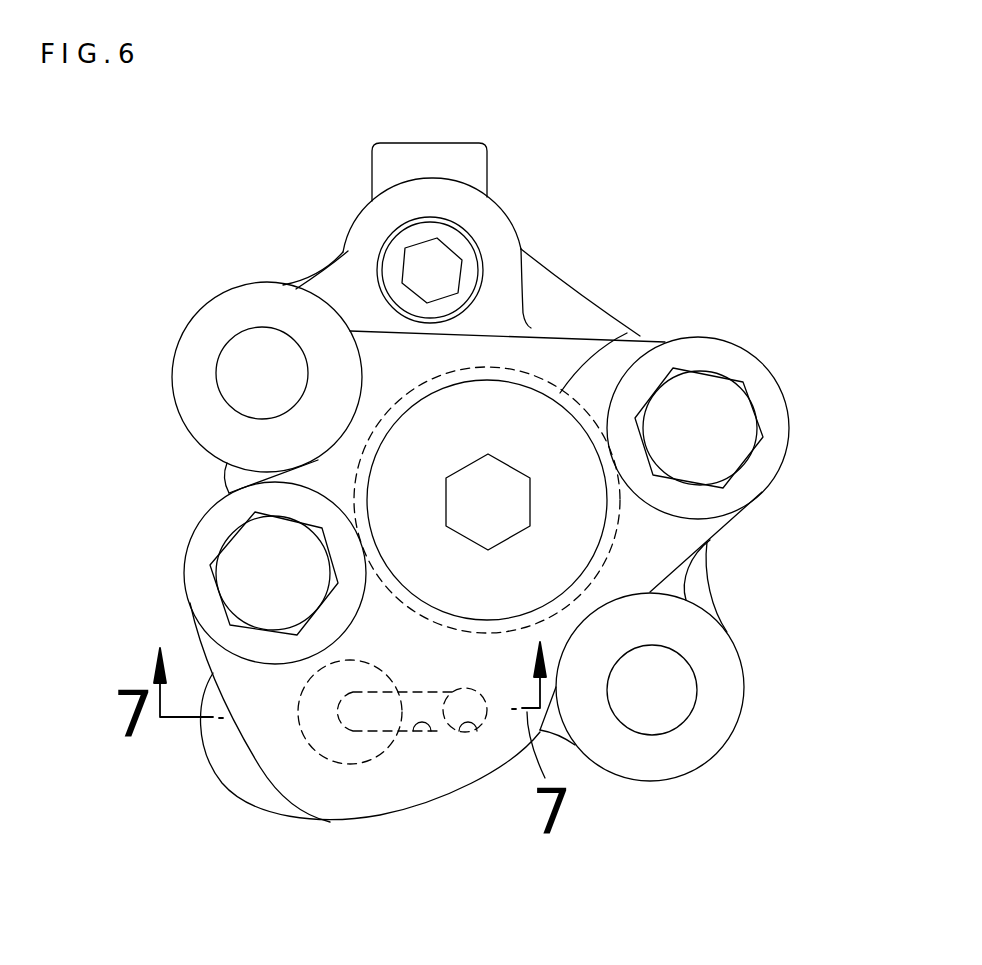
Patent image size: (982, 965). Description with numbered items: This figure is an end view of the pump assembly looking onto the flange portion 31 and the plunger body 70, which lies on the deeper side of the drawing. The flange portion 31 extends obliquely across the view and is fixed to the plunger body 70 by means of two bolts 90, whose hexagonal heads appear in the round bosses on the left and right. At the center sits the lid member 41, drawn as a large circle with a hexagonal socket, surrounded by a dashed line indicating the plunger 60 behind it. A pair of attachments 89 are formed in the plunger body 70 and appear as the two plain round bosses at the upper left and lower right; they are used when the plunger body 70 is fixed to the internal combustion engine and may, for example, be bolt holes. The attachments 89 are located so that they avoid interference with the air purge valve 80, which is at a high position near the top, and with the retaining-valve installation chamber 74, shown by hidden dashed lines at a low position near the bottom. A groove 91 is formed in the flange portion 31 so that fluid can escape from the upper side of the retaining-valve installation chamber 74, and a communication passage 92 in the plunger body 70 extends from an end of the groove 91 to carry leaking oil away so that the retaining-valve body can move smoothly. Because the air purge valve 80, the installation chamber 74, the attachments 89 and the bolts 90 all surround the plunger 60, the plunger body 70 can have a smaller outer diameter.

The flange portion 31 is at (753, 350).
The lid member 41 is at (560, 513).
The plunger 60 is at (625, 328).
The plunger body 70 is at (560, 303).
The retaining-valve installation chamber 74 is at (352, 762).
The air purge valve 80 is at (470, 200).
The attachment 89 is at (219, 363).
The bolt 90 is at (720, 422).
The groove 91 is at (426, 735).
The communication passage 92 is at (474, 733).